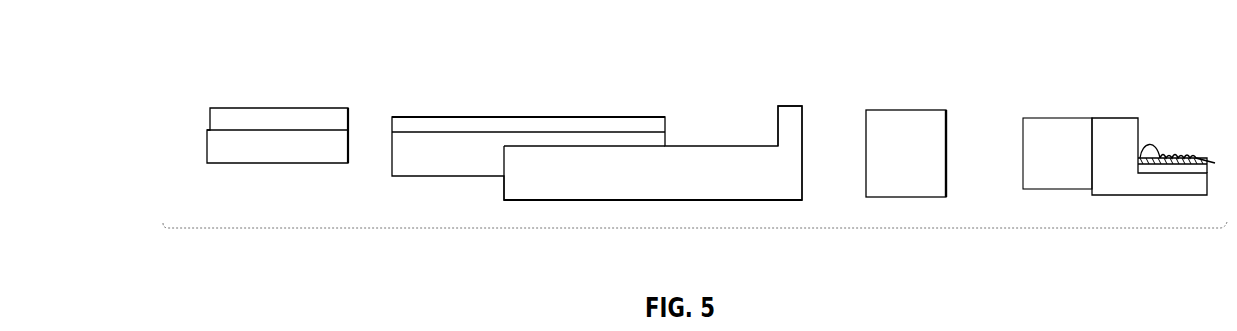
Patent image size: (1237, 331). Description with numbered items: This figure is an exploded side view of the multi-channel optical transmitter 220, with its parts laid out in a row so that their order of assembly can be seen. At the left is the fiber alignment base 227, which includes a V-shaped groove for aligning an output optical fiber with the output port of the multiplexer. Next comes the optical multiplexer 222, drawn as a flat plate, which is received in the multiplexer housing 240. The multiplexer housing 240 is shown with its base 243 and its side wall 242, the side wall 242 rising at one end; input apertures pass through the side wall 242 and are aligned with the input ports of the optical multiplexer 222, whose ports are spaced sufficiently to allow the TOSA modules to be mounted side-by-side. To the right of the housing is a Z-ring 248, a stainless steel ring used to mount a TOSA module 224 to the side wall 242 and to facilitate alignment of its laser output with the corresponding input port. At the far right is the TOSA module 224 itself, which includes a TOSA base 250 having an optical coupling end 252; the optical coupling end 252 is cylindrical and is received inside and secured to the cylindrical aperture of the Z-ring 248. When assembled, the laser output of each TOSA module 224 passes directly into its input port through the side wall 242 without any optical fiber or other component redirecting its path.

The multi-channel optical transmitter 220 is at (689, 226).
The optical multiplexer 222 is at (460, 125).
The TOSA module 224 is at (1172, 90).
The fiber alignment base 227 is at (278, 163).
The multiplexer housing 240 is at (712, 118).
The side wall 242 is at (785, 106).
The base 243 is at (503, 187).
The Z-ring 248 is at (905, 110).
The TOSA base 250 is at (1111, 92).
The optical coupling end 252 is at (1045, 118).